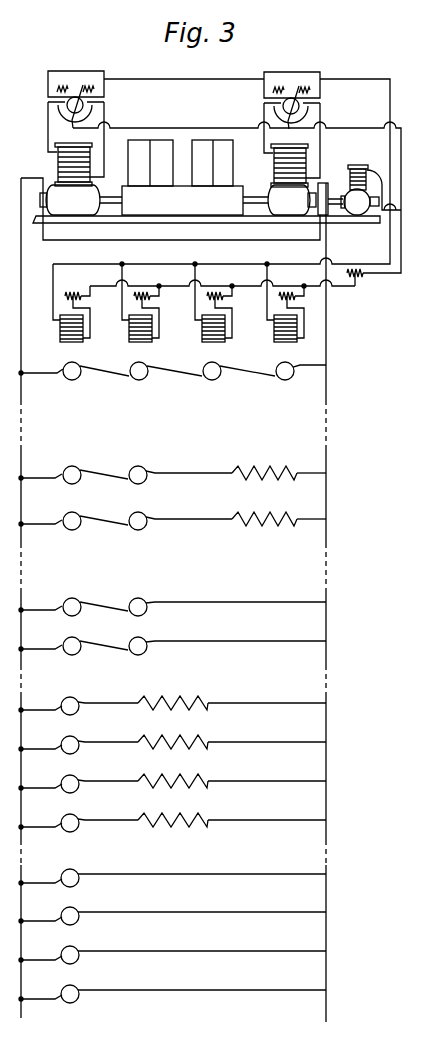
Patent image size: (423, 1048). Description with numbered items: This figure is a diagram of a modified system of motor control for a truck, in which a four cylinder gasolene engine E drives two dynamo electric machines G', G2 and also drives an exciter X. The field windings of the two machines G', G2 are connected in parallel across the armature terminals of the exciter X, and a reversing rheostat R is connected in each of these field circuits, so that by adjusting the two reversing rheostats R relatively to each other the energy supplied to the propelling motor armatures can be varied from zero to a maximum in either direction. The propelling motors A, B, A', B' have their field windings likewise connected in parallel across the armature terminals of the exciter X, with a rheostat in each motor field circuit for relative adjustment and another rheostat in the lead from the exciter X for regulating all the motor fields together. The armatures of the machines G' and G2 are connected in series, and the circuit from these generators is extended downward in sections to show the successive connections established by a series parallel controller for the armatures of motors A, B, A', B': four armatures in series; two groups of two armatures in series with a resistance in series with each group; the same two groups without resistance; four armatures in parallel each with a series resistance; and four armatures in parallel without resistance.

The reversing rheostat R is at (184, 119).
The dynamo electric machine G' is at (70, 200).
The dynamo electric machine G2 is at (292, 200).
The four cylinder gasolene engine E is at (182, 177).
The exciter X is at (371, 209).
The propelling motor A is at (72, 385).
The propelling motor B is at (139, 385).
The propelling motor A' is at (212, 385).
The propelling motor B' is at (286, 385).